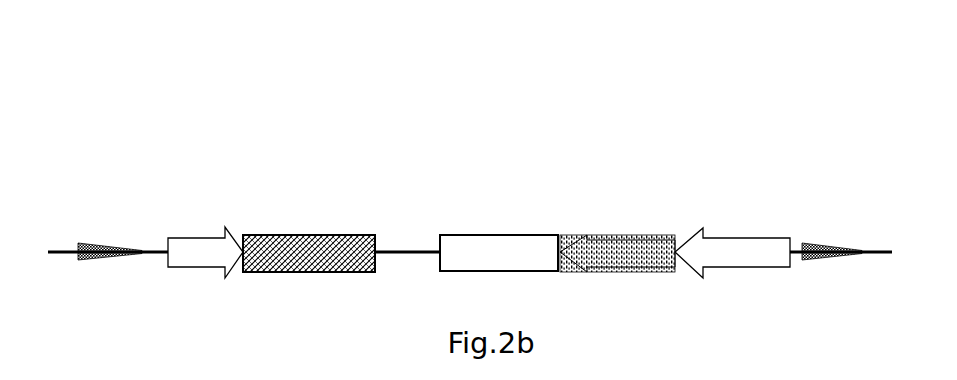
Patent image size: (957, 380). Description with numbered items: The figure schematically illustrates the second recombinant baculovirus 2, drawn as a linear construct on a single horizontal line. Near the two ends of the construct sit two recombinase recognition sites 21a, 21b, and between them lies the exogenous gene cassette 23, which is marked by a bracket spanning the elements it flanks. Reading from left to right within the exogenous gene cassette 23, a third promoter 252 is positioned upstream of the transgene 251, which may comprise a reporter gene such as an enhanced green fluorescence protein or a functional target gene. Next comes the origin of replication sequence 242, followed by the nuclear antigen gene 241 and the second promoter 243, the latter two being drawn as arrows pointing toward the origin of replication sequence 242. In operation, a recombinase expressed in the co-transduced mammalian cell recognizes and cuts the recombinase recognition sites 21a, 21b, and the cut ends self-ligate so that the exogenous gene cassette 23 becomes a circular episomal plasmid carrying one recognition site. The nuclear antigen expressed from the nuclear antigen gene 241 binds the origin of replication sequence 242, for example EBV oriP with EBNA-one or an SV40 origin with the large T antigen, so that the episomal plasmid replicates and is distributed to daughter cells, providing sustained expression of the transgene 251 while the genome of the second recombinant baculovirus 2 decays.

The second recombinant baculovirus 2 is at (62, 38).
The recombinase recognition site 21a is at (119, 246).
The recombinase recognition site 21b is at (855, 246).
The exogenous gene cassette 23 is at (767, 155).
The third promoter 252 is at (218, 232).
The transgene 251 is at (313, 233).
The origin of replication sequence 242 is at (498, 233).
The nuclear antigen gene 241 is at (632, 233).
The second promoter 243 is at (725, 239).